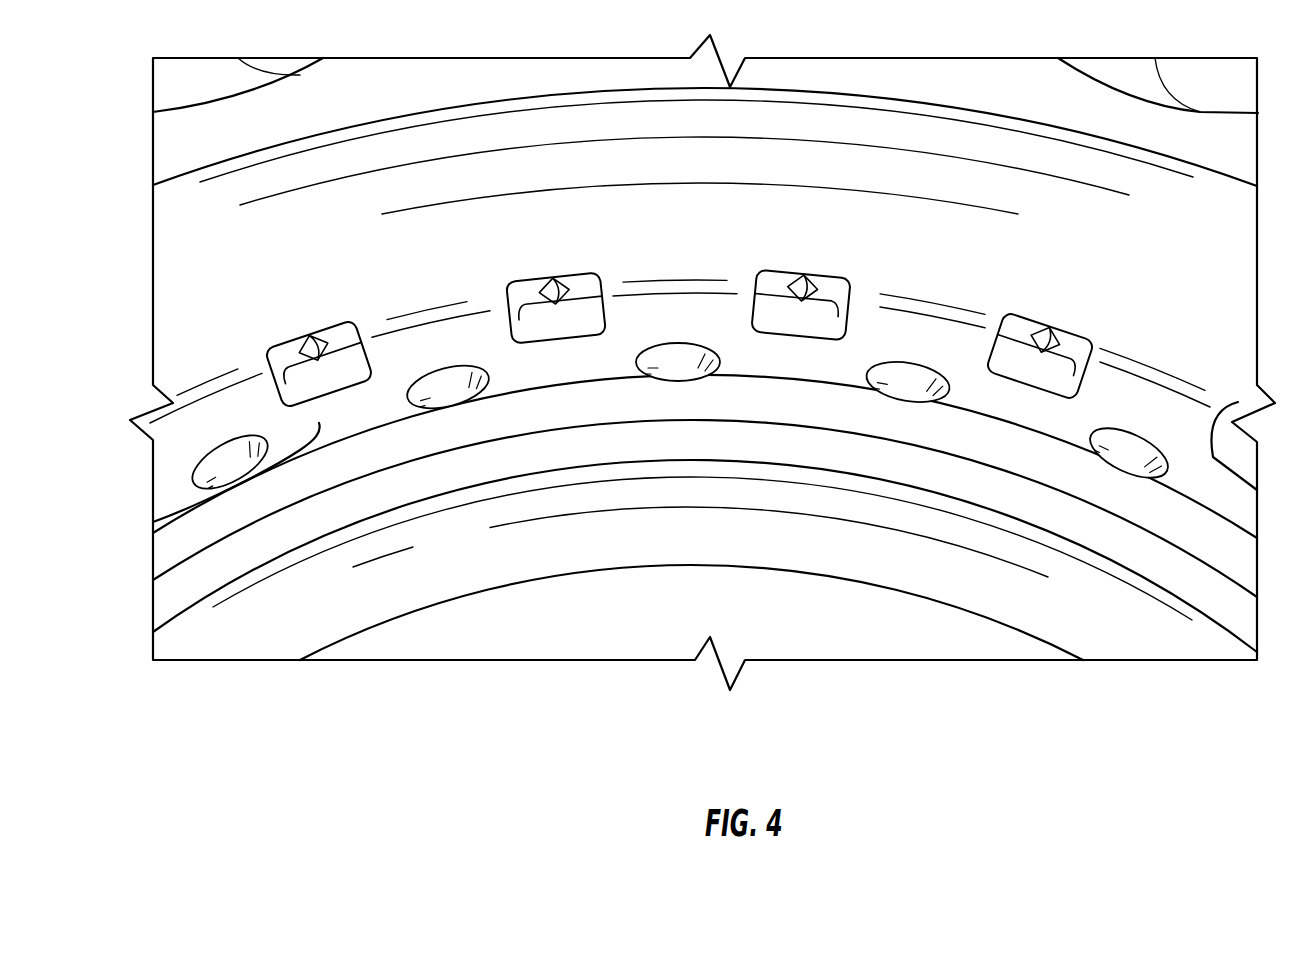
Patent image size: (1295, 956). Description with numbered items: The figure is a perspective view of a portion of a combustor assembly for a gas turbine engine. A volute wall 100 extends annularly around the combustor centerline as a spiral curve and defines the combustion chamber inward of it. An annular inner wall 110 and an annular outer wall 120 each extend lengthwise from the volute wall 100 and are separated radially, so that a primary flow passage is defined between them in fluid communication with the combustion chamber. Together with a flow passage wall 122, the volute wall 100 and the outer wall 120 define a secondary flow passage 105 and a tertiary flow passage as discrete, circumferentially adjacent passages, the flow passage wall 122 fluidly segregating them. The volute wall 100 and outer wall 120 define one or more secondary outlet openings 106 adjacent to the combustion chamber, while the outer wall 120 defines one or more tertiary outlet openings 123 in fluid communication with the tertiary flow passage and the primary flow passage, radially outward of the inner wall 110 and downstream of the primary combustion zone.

The volute wall 100 is at (203, 291).
The secondary flow passage 105 is at (560, 315).
The secondary outlet opening 106 is at (515, 342).
The inner wall 110 is at (792, 440).
The outer wall 120 is at (213, 498).
The flow passage wall 122 is at (647, 298).
The tertiary outlet opening 123 is at (672, 358).